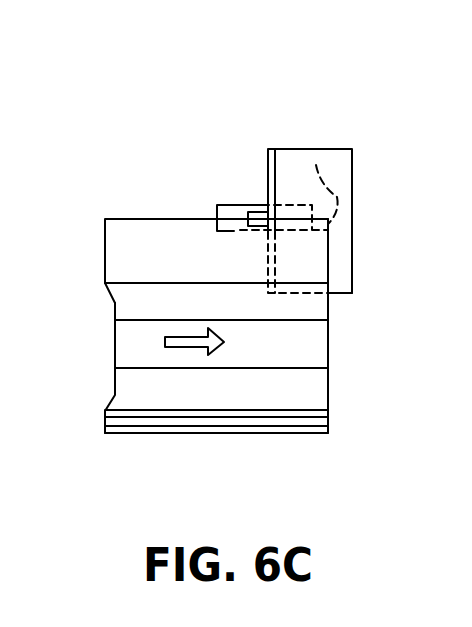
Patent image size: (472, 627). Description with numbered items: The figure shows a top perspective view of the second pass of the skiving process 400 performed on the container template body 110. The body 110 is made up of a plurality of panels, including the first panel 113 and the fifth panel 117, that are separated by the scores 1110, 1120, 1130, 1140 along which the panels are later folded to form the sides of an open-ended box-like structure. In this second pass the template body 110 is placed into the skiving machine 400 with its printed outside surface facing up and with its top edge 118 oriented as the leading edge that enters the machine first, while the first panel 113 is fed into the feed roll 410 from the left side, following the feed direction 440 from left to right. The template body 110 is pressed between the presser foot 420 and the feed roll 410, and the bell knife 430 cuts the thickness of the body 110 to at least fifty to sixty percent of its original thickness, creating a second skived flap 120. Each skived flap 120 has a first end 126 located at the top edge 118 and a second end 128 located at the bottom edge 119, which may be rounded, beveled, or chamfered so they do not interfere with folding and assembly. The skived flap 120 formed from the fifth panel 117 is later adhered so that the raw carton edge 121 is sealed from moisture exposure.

The container template body 110 is at (342, 411).
The first panel 113 is at (148, 237).
The fifth panel 117 is at (106, 415).
The top edge 118 is at (328, 319).
The bottom edge 119 is at (115, 342).
The skived flap 120 is at (128, 427).
The raw carton edge 121 is at (178, 422).
The first end 126 is at (338, 233).
The second end 128 is at (103, 230).
The score 1110 is at (303, 410).
The score 1120 is at (310, 368).
The score 1130 is at (130, 318).
The score 1140 is at (123, 283).
The skiving process 400 is at (343, 110).
The feed roll 410 is at (230, 213).
The presser foot 420 is at (262, 212).
The bell knife 430 is at (353, 157).
The feed direction 440 is at (188, 348).